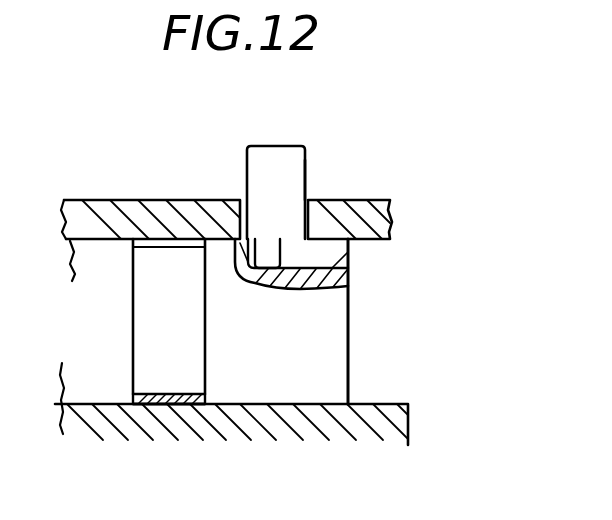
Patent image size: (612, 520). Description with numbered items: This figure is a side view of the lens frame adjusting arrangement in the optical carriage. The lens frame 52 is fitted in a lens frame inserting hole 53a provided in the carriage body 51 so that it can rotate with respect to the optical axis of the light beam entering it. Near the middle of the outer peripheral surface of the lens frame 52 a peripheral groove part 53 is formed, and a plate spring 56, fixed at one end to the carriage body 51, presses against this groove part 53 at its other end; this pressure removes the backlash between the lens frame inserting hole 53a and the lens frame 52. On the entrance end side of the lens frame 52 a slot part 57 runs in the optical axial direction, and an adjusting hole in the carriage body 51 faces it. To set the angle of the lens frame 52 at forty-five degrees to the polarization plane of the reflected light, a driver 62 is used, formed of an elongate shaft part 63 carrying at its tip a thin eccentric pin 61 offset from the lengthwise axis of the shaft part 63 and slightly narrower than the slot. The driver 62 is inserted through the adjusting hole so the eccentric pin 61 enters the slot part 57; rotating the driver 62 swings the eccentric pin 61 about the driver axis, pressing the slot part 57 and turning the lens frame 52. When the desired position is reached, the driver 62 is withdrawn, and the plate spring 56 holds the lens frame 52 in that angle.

The carriage body 51 is at (387, 203).
The lens frame 52 is at (348, 367).
The peripheral groove part 53 is at (157, 404).
The lens frame inserting hole 53a is at (388, 405).
The plate spring 56 is at (187, 404).
The slot part 57 is at (330, 266).
The eccentric pin 61 is at (282, 250).
The driver 62 is at (292, 146).
The shaft part 63 is at (305, 175).